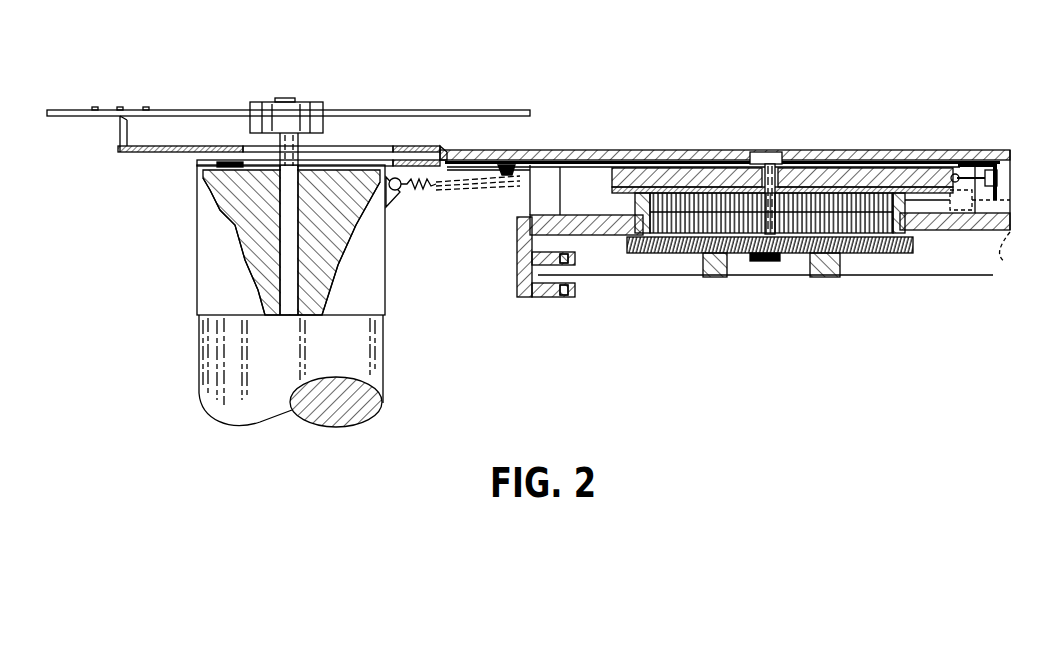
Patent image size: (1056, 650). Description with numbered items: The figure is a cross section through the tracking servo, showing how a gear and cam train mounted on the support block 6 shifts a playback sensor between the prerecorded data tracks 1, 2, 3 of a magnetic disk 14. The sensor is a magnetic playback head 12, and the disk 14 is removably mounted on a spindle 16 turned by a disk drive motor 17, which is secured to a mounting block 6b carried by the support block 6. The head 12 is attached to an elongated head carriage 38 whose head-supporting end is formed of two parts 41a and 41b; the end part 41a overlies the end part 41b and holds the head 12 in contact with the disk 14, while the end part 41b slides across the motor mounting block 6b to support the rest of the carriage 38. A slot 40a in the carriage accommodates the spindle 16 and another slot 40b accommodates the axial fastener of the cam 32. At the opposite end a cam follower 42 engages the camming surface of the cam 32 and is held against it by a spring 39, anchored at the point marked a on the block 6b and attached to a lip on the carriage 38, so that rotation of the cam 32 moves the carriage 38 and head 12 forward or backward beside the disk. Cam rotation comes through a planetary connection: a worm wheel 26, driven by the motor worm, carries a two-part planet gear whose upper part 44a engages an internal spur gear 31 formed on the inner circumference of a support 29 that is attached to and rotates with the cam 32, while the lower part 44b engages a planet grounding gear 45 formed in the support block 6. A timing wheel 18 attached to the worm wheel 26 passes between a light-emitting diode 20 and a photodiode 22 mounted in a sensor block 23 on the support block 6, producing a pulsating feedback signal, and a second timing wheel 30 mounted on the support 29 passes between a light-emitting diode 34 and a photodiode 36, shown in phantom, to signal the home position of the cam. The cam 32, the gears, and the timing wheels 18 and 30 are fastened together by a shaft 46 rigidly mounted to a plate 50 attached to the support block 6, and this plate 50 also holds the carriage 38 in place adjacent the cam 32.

The data track 1 is at (95, 110).
The data track 2 is at (120, 110).
The data track 3 is at (146, 110).
The support block 6 is at (1005, 215).
The mounting block 6b is at (385, 250).
The magnetic playback head 12 is at (120, 128).
The magnetic disk 14 is at (288, 113).
The spindle 16 is at (323, 124).
The disk drive motor 17 is at (383, 335).
The timing wheel 18 is at (935, 275).
The light-emitting diode 20 is at (555, 297).
The photodiode 22 is at (565, 253).
The sensor block 23 is at (518, 285).
The worm wheel 26 is at (855, 250).
The support 29 is at (620, 200).
The timing wheel 30 is at (636, 205).
The internal spur gear 31 is at (692, 195).
The cam 32 is at (612, 162).
The light-emitting diode 34 is at (1019, 254).
The photodiode 36 is at (990, 200).
The head carriage 38 is at (740, 150).
The spring 39 is at (497, 172).
The slot 40a is at (395, 148).
The slot 40b is at (865, 158).
The end part 41a is at (243, 149).
The end part 41b is at (215, 170).
The cam follower 42 is at (968, 168).
The upper part of planet gear 44a is at (965, 165).
The lower part of planet gear 44b is at (905, 215).
The planet grounding gear 45 is at (632, 240).
The shaft 46 is at (780, 163).
The plate 50 is at (605, 150).
The point a is at (393, 192).